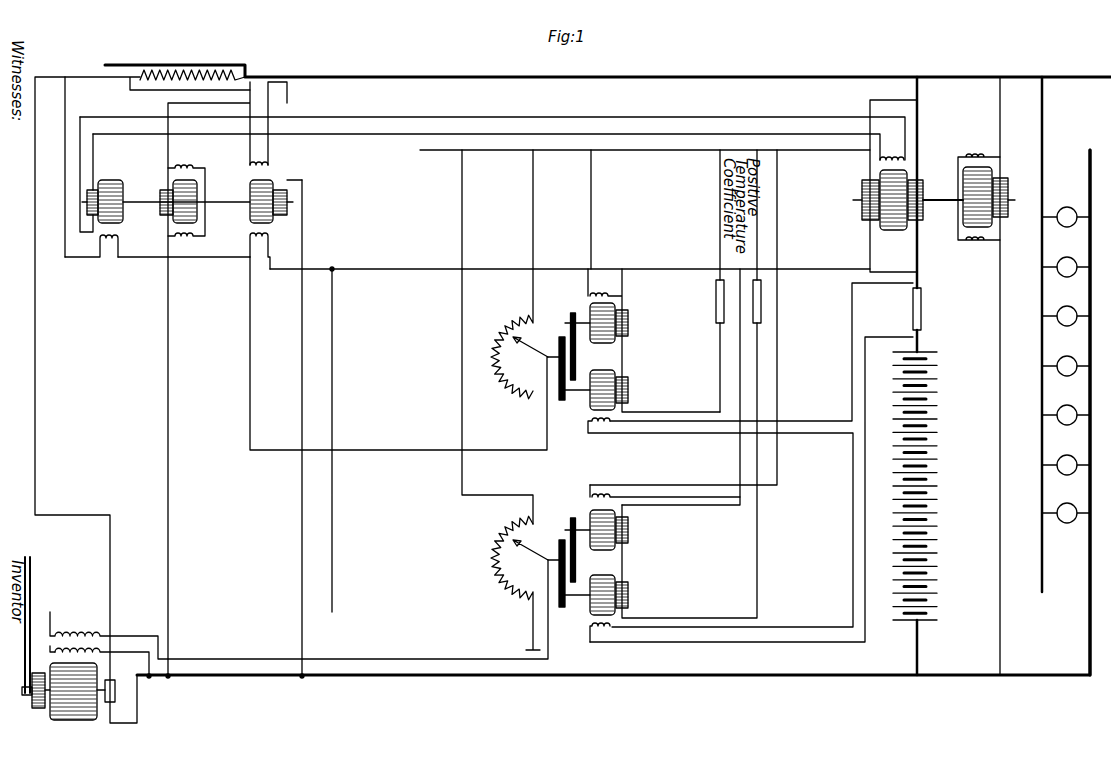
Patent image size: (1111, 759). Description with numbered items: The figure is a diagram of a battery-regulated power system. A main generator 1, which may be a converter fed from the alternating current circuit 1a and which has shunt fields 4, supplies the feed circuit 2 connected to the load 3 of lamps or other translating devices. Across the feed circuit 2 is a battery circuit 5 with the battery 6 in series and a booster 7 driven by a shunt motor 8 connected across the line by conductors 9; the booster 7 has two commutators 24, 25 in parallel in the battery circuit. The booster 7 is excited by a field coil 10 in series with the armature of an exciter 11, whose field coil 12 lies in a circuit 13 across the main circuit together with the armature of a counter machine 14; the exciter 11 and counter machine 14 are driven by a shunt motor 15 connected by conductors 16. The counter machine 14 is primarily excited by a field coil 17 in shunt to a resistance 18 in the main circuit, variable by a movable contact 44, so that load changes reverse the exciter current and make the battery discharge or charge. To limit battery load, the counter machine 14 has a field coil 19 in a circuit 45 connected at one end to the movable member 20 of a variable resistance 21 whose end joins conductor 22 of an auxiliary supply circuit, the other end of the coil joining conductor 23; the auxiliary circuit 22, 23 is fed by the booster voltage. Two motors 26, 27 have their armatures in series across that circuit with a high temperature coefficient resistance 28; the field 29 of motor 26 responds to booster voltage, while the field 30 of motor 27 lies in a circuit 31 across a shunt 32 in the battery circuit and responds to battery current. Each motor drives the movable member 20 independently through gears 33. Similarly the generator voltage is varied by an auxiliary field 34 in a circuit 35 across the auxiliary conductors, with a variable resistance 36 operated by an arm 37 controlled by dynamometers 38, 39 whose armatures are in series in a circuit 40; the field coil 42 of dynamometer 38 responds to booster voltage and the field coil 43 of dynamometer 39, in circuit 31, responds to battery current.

The main generator 1 is at (100, 686).
The alternating current circuit 1a is at (31, 592).
The feed circuit 2 is at (33, 215).
The load 3 is at (64, 146).
The shunt fields 4 is at (54, 650).
The battery circuit 5 is at (920, 130).
The battery 6 is at (930, 476).
The booster 7 is at (888, 190).
The shunt motor 8 is at (978, 167).
The conductors 9 is at (1000, 120).
The field coil 10 is at (890, 156).
The exciter 11 is at (112, 194).
The field coil 12 is at (110, 247).
The circuit 13 is at (205, 259).
The counter machine 14 is at (266, 192).
The shunt motor 15 is at (188, 194).
The conductors 16 is at (288, 102).
The field coil 17 is at (272, 165).
The resistance 18 is at (158, 66).
The field coil 19 is at (250, 235).
The movable member 20 is at (542, 358).
The variable resistance 21 is at (500, 372).
The conductor 22 is at (645, 141).
The conductor 23 is at (490, 267).
The commutator 24 is at (915, 192).
The commutator 25 is at (865, 215).
The motor 26 is at (629, 320).
The motor 27 is at (629, 386).
The high temperature coefficient resistance 28 is at (716, 300).
The field 29 is at (603, 283).
The field 30 is at (604, 426).
The circuit 31 is at (851, 340).
The shunt 32 is at (922, 305).
The gears 33 is at (561, 340).
The auxiliary field 34 is at (78, 632).
The circuit 35 is at (461, 313).
The variable resistance 36 is at (496, 555).
The movable arm 37 is at (530, 556).
The dynamometer 38 is at (629, 532).
The dynamometer 39 is at (629, 590).
The circuit 40 is at (698, 506).
The field coil 42 is at (592, 499).
The field coil 43 is at (620, 626).
The movable contact 44 is at (180, 72).
The circuit 45 is at (410, 267).